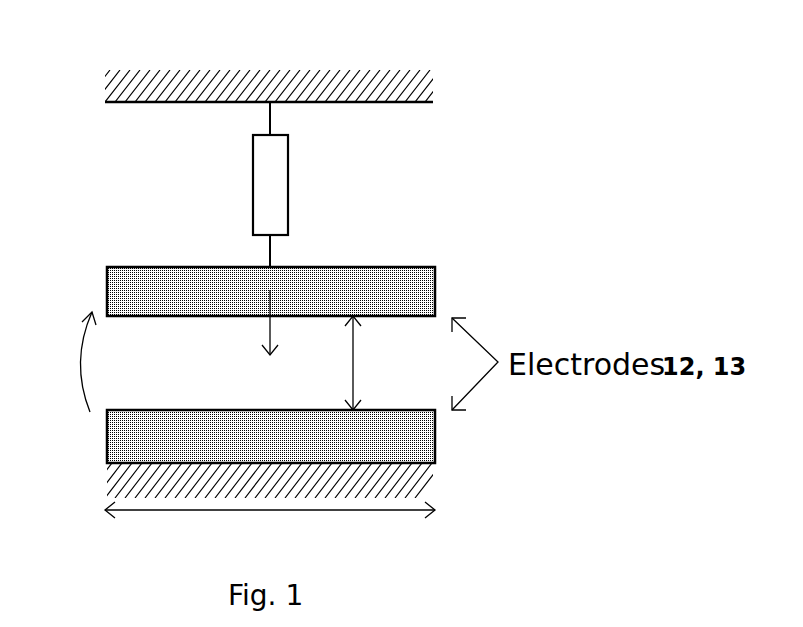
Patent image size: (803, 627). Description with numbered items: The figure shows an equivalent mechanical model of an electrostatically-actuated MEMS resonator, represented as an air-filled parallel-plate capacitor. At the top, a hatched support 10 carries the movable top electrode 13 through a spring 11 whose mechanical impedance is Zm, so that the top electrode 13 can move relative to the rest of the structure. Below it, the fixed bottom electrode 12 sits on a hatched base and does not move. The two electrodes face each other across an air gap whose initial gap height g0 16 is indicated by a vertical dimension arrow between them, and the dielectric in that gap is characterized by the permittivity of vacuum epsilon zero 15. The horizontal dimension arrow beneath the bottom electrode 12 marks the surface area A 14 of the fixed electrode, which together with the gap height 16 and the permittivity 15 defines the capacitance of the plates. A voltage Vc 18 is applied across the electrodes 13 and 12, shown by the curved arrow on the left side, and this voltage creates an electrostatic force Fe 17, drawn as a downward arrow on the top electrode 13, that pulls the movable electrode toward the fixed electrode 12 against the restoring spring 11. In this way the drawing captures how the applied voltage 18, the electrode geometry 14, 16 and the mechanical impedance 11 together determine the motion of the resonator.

The support 10 is at (433, 80).
The mechanical impedance of the electrode 11 is at (288, 181).
The fixed electrode 12 is at (410, 433).
The movable electrode 13 is at (410, 295).
The area A of the fixed electrode 14 is at (270, 527).
The permittivity of vacuum 15 is at (167, 384).
The gap height 16 is at (384, 363).
The electrostatic force 17 is at (249, 344).
The voltage across the electrodes 18 is at (50, 362).